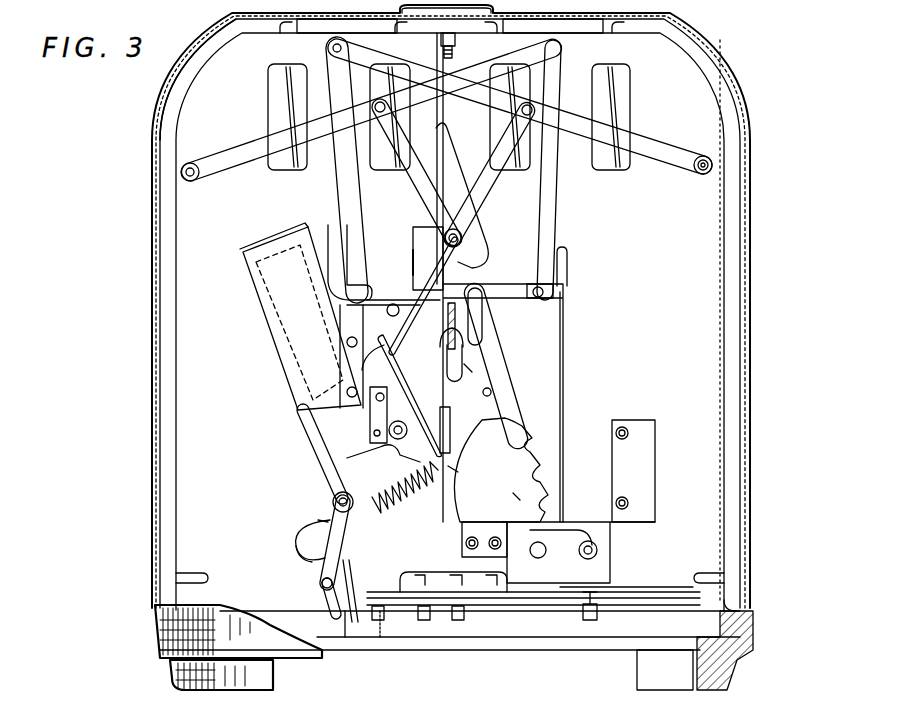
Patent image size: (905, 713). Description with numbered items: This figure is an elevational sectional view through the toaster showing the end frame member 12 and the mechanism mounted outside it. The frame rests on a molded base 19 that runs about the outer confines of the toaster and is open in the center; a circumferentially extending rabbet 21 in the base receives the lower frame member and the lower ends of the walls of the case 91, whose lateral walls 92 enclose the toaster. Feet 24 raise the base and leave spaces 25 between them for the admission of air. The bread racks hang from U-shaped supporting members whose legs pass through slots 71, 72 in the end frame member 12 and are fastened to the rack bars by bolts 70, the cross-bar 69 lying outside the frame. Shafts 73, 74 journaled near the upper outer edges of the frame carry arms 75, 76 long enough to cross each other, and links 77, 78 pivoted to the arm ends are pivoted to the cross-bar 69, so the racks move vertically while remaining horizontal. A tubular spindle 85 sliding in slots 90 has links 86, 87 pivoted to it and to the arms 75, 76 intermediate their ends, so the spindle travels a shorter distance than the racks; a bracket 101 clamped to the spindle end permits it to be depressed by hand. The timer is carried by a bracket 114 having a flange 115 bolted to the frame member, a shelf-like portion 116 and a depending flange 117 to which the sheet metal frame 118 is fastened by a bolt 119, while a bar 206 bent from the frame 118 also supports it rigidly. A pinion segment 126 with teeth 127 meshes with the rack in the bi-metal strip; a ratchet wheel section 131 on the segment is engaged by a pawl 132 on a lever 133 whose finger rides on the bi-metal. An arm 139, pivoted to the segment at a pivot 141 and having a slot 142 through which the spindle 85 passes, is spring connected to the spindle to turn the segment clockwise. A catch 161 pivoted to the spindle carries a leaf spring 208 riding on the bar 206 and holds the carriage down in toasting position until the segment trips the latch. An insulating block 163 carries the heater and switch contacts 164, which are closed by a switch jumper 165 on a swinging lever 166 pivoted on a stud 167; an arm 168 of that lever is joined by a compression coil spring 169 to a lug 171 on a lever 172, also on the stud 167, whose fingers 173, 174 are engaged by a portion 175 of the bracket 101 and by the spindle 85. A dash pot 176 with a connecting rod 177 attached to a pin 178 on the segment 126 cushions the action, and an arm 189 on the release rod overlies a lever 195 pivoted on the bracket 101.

The end frame member 12 is at (186, 434).
The base 19 is at (745, 662).
The rabbet 21 is at (740, 598).
The feet 24 is at (196, 690).
The spaces 25 is at (410, 674).
The cross-bar 69 is at (498, 290).
The bolt 70 is at (668, 170).
The slot 71 is at (330, 255).
The slot 72 is at (567, 276).
The shaft 73 is at (192, 168).
The shaft 74 is at (706, 165).
The arm 75 is at (268, 157).
The arm 76 is at (650, 141).
The link 77 is at (342, 182).
The link 78 is at (552, 207).
The spindle 85 is at (462, 240).
The link 86 is at (494, 184).
The link 87 is at (406, 172).
The slot 90 is at (470, 366).
The case 91 is at (200, 42).
The lateral wall 92 is at (160, 380).
The bracket 101 is at (455, 306).
The bracket 114 is at (640, 524).
The flange 115 is at (652, 478).
The shelf-like portion 116 is at (585, 522).
The flange 117 is at (492, 532).
The frame 118 is at (447, 562).
The bolt 119 is at (502, 560).
The pinion segment 126 is at (505, 438).
The teeth 127 is at (513, 493).
The ratchet wheel section 131 is at (322, 506).
The pawl 132 is at (302, 546).
The lever 133 is at (312, 560).
The arm 139 is at (498, 362).
The pivot 141 is at (491, 392).
The slot 142 is at (478, 322).
The catch 161 is at (430, 182).
The insulating block 163 is at (420, 594).
The switch contacts 164 is at (363, 614).
The switch jumper 165 is at (326, 598).
The swinging lever 166 is at (322, 575).
The stud 167 is at (322, 520).
The arm 168 is at (372, 510).
The compression coil spring 169 is at (428, 510).
The lug 171 is at (442, 465).
The lever 172 is at (416, 420).
The finger 173 is at (452, 457).
The finger 174 is at (388, 320).
The bracket portion 175 is at (460, 386).
The dash pot 176 is at (278, 322).
The connecting rod 177 is at (323, 422).
The pin 178 is at (332, 490).
The arm 189 is at (386, 346).
The lever 195 is at (422, 257).
The bar 206 is at (463, 158).
The leaf spring 208 is at (455, 180).